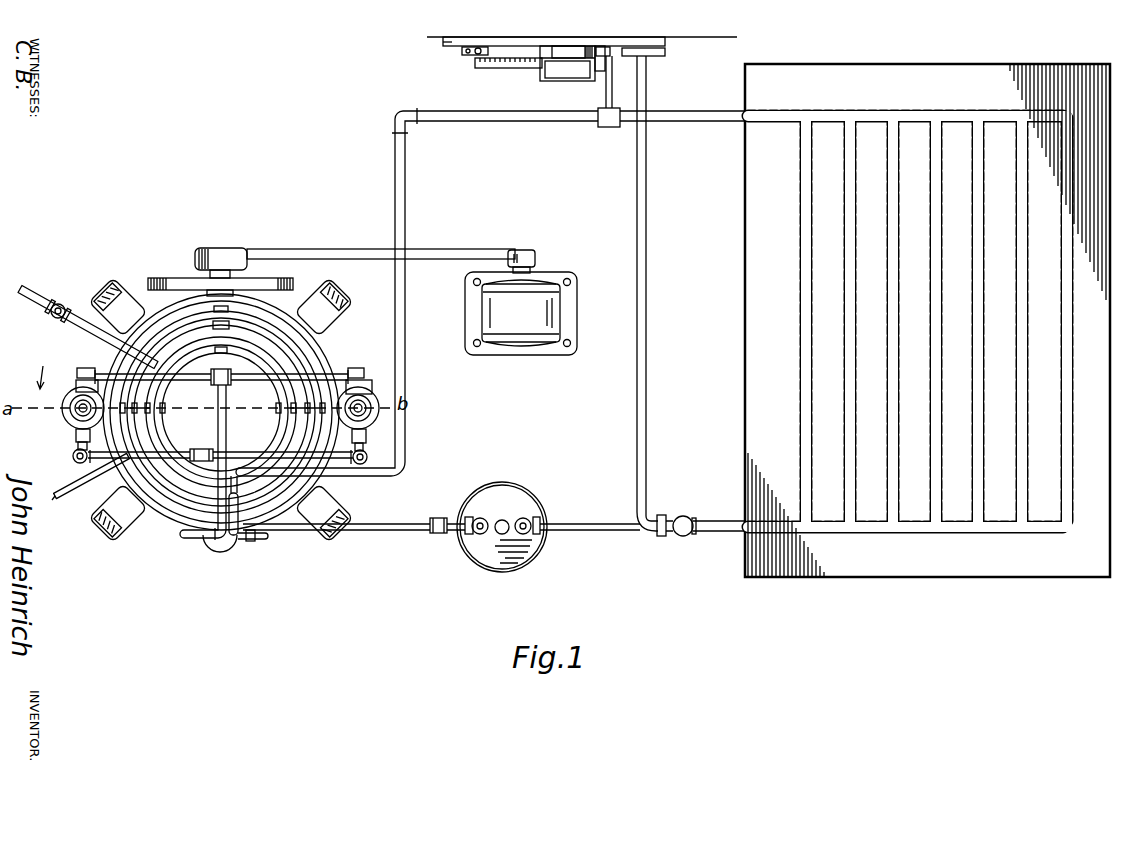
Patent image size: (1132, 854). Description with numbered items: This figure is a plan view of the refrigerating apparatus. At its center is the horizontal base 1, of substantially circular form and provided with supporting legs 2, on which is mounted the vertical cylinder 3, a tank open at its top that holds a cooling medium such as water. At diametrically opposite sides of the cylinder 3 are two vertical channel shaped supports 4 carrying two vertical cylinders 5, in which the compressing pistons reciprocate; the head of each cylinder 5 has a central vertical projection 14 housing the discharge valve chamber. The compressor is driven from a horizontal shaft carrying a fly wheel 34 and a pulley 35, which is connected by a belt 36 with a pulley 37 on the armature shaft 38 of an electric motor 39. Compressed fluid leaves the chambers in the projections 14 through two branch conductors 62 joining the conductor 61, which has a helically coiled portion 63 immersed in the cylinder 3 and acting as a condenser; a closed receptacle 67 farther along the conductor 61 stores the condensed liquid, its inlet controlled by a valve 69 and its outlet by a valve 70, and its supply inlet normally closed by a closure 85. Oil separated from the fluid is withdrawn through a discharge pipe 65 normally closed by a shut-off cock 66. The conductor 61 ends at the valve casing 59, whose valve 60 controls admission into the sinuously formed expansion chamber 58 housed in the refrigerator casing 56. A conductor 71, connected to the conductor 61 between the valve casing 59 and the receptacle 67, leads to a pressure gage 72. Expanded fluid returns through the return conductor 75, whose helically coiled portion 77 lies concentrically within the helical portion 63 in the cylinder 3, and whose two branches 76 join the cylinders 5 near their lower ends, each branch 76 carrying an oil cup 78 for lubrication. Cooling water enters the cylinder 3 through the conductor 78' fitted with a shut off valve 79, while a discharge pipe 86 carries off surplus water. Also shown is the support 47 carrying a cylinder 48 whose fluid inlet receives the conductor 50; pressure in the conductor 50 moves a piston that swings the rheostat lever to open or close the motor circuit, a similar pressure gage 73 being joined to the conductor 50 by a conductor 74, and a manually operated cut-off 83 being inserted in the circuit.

The horizontal base 1 is at (340, 358).
The supporting legs 2 is at (115, 284).
The vertical cylinder 3 is at (292, 312).
The vertical supports 4 is at (86, 467).
The vertical cylinders 5 is at (63, 423).
The central vertical projection 14 is at (72, 381).
The fly wheel 34 is at (186, 277).
The pulley 35 is at (245, 242).
The belt 36 is at (360, 242).
The pulley 37 is at (530, 244).
The armature shaft 38 is at (532, 271).
The electric motor 39 is at (521, 313).
The support 47 is at (540, 30).
The cylinder 48 is at (573, 81).
The conductor 50 is at (607, 94).
The refrigerator casing 56 is at (927, 320).
The expansion chamber 58 is at (689, 118).
The valve casing 59 is at (688, 538).
The valve 60 is at (660, 537).
The conductor 61 is at (217, 432).
The branch conductors 62 is at (198, 382).
The helically coiled portion 63 is at (165, 492).
The discharge pipe 65 is at (262, 541).
The shut-off cock 66 is at (247, 542).
The closed receptacle 67 is at (505, 476).
The valve 69 is at (488, 511).
The valve 70 is at (527, 511).
The conductor 71 is at (647, 172).
The pressure gage 72 is at (664, 53).
The pressure gage 73 is at (581, 46).
The conductor 74 is at (607, 46).
The return conductor 75 is at (515, 122).
The branches 76 is at (253, 446).
The helically coiled portion 77 is at (286, 411).
The oil cup 78 is at (242, 459).
The conductor 78' is at (88, 319).
The shut off valve 79 is at (66, 309).
The manually operated cut-off 83 is at (463, 51).
The closure 85 is at (497, 532).
The discharge pipe 86 is at (57, 502).